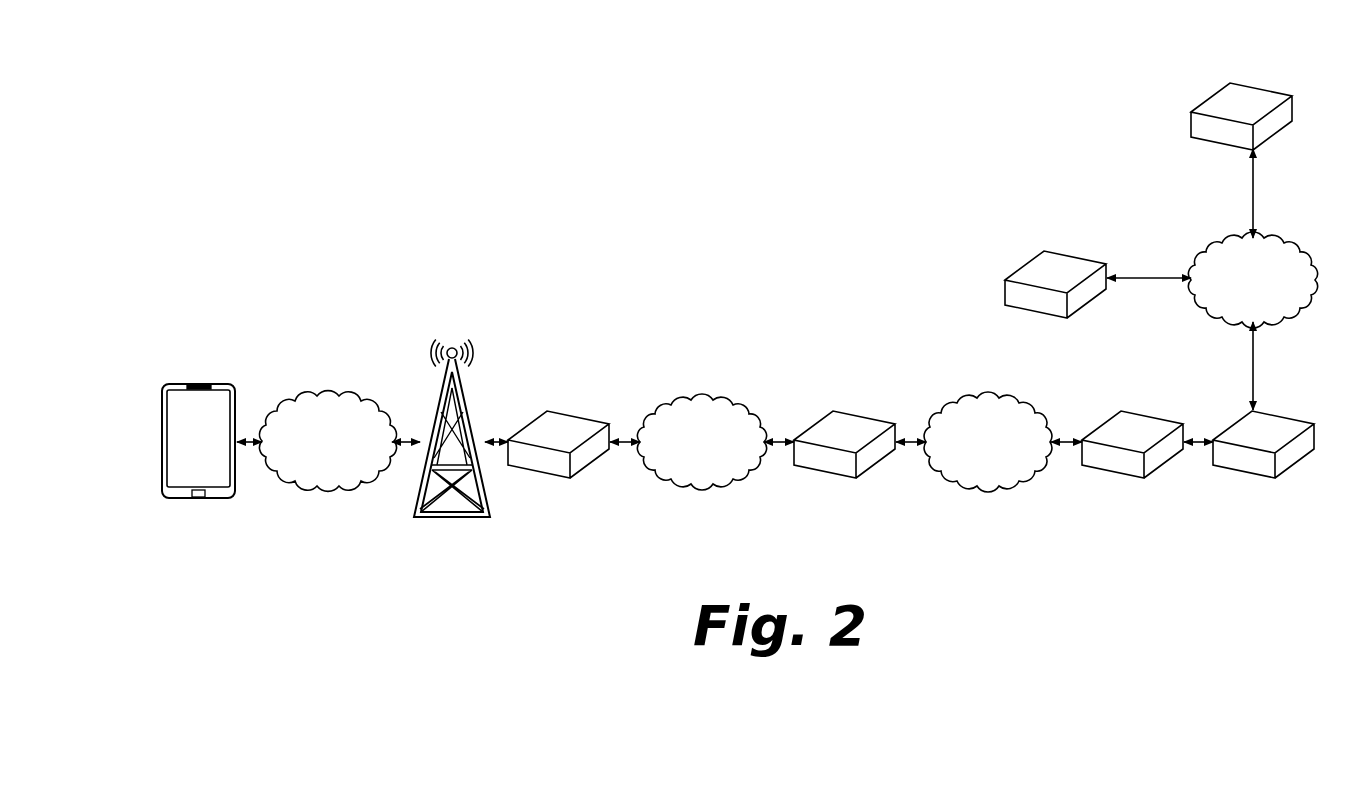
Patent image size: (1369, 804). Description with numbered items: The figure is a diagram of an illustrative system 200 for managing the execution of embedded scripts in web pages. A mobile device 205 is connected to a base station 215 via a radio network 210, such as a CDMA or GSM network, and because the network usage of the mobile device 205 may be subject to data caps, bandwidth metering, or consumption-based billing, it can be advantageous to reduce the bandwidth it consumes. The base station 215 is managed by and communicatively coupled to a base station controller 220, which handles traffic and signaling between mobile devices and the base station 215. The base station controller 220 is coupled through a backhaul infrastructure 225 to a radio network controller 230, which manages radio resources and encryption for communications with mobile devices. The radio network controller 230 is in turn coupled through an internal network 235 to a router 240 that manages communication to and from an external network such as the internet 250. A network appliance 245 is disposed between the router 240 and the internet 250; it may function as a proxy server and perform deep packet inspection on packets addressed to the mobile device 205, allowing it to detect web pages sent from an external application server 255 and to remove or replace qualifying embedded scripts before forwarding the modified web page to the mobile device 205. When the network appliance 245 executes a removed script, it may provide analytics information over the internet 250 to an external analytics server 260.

The system 200 is at (270, 234).
The mobile device 205 is at (182, 384).
The radio network 210 is at (313, 397).
The base station 215 is at (437, 410).
The base station controller 220 is at (570, 418).
The backhaul infrastructure 225 is at (700, 400).
The radio network controller 230 is at (862, 415).
The internal network 235 is at (985, 399).
The router 240 is at (1150, 418).
The network appliance 245 is at (1235, 421).
The internet 250 is at (1212, 240).
The external application server 255 is at (1192, 112).
The external analytics server 260 is at (1013, 275).